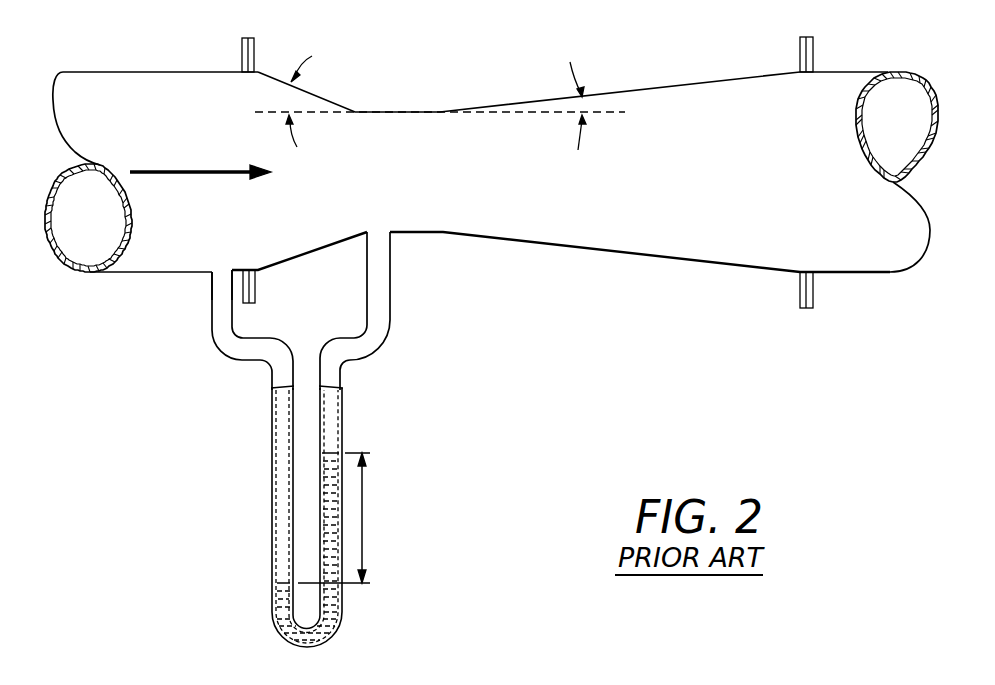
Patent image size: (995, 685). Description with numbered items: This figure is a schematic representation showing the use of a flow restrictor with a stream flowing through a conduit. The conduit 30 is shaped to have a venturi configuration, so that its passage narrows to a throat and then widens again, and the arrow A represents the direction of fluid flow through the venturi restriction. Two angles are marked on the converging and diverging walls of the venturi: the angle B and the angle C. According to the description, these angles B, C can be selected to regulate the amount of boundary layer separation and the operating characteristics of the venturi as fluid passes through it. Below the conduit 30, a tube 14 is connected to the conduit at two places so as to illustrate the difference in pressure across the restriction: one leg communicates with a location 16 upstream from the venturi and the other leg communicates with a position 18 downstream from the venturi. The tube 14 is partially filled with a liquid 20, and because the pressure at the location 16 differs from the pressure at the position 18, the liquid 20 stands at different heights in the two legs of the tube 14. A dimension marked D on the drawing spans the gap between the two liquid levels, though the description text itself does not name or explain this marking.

The conduit 30 is at (137, 70).
The tube 14 is at (222, 320).
The location upstream from the venturi 16 is at (221, 277).
The position downstream from the venturi 18 is at (380, 238).
The liquid 20 is at (330, 625).
The arrow A is at (173, 172).
The angle B is at (292, 98).
The angle C is at (583, 103).
The manometer liquid height difference D is at (364, 521).